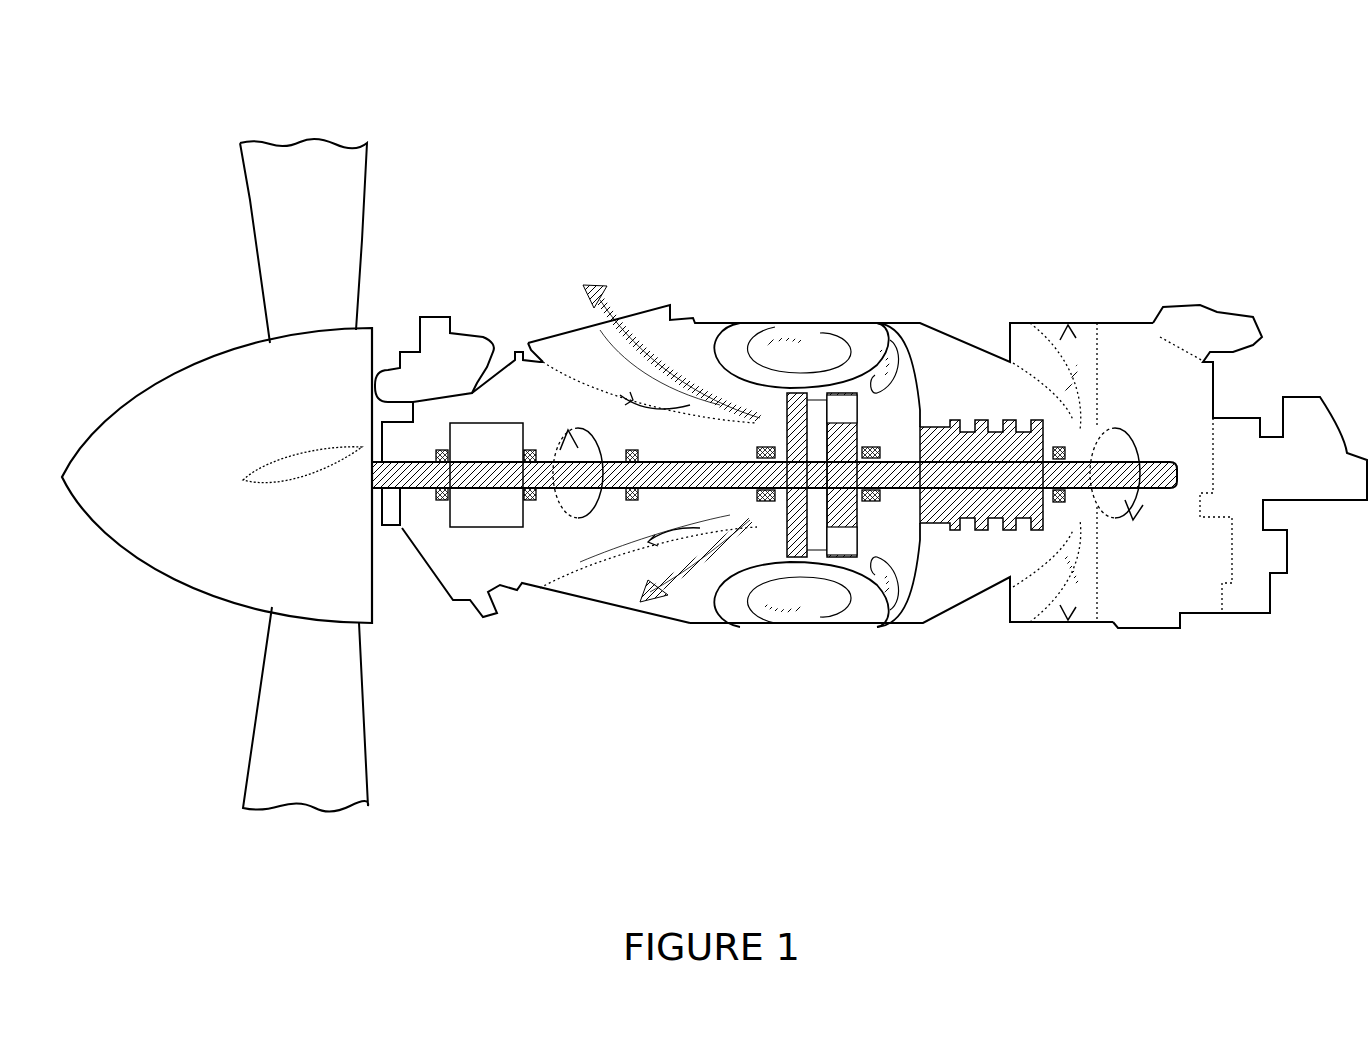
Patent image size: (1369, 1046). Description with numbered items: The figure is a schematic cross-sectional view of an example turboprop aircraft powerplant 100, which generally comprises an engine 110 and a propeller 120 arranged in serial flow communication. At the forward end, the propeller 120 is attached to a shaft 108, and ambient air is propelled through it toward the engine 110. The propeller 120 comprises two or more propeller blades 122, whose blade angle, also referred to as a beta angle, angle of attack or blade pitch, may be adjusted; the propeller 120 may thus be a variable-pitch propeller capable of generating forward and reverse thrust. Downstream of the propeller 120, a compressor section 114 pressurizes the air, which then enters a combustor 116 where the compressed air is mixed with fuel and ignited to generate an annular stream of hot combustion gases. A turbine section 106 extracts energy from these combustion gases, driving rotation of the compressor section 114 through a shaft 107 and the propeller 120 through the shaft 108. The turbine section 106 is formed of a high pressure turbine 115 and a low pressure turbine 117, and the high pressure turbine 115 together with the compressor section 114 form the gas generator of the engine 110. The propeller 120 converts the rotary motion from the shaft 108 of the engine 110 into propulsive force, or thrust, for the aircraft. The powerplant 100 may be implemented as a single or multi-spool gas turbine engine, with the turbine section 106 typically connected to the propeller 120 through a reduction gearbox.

The aircraft powerplant 100 is at (996, 86).
The turbine section 106 is at (747, 500).
The shaft 107 is at (912, 625).
The shaft 108 is at (400, 490).
The engine 110 is at (1290, 280).
The compressor section 114 is at (967, 538).
The high pressure turbine 115 is at (840, 513).
The combustor 116 is at (840, 353).
The low pressure turbine 117 is at (800, 513).
The propeller 120 is at (368, 127).
The propeller blades 122 is at (345, 195).